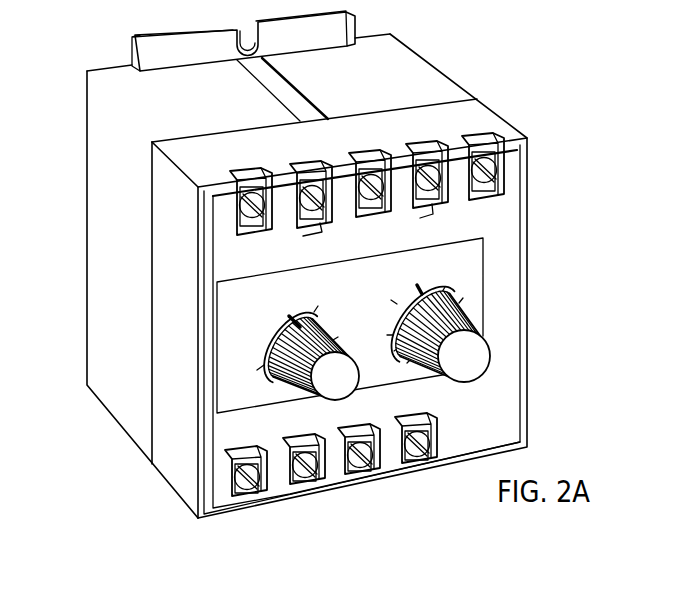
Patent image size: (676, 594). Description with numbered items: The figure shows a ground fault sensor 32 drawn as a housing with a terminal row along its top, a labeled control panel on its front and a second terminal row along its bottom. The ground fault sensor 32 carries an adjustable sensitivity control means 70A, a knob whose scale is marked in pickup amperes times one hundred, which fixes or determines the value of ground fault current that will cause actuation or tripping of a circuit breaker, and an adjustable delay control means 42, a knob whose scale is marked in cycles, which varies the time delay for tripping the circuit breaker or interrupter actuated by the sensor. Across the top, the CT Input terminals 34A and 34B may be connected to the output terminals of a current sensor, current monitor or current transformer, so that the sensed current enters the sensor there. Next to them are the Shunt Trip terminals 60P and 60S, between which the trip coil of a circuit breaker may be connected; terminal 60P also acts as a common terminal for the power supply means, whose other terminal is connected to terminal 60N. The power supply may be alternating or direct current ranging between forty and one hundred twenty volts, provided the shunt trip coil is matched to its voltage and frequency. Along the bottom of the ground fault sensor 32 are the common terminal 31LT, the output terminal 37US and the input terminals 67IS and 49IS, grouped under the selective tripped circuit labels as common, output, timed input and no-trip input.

The ground fault sensor 32 is at (84, 113).
The CT Input terminal 34A is at (240, 181).
The CT Input terminal 34B is at (303, 176).
The Shunt Trip terminal 60P is at (366, 162).
The Shunt Trip terminal 60S is at (418, 152).
The power supply terminal 60N is at (478, 148).
The adjustable sensitivity control means 70A is at (306, 385).
The adjustable delay control means 42 is at (481, 362).
The common terminal 31LT is at (247, 503).
The output terminal 37US is at (311, 490).
The input terminal 67IS is at (361, 480).
The input terminal 49IS is at (420, 466).